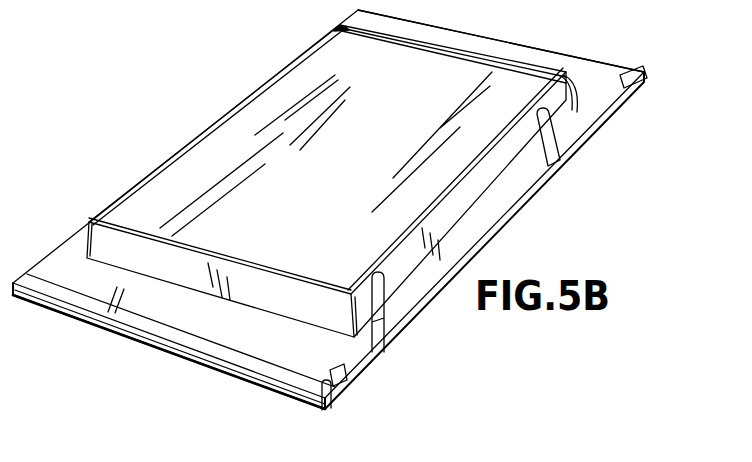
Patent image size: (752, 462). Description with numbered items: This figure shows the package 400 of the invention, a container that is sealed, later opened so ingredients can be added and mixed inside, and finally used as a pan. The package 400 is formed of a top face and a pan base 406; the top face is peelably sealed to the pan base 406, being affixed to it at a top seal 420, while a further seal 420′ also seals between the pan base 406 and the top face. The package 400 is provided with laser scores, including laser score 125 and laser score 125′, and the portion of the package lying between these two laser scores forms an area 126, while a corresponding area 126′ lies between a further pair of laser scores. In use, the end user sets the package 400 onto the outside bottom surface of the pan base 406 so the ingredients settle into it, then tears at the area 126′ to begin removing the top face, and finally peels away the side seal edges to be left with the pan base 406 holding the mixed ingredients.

The package 400 is at (300, 181).
The pan base 406 is at (515, 240).
The top seal 420 is at (233, 356).
The seal 420′ is at (461, 30).
The laser score 125 is at (378, 355).
The laser score 125′ is at (327, 385).
The area 126 is at (337, 373).
The area 126′ is at (632, 59).